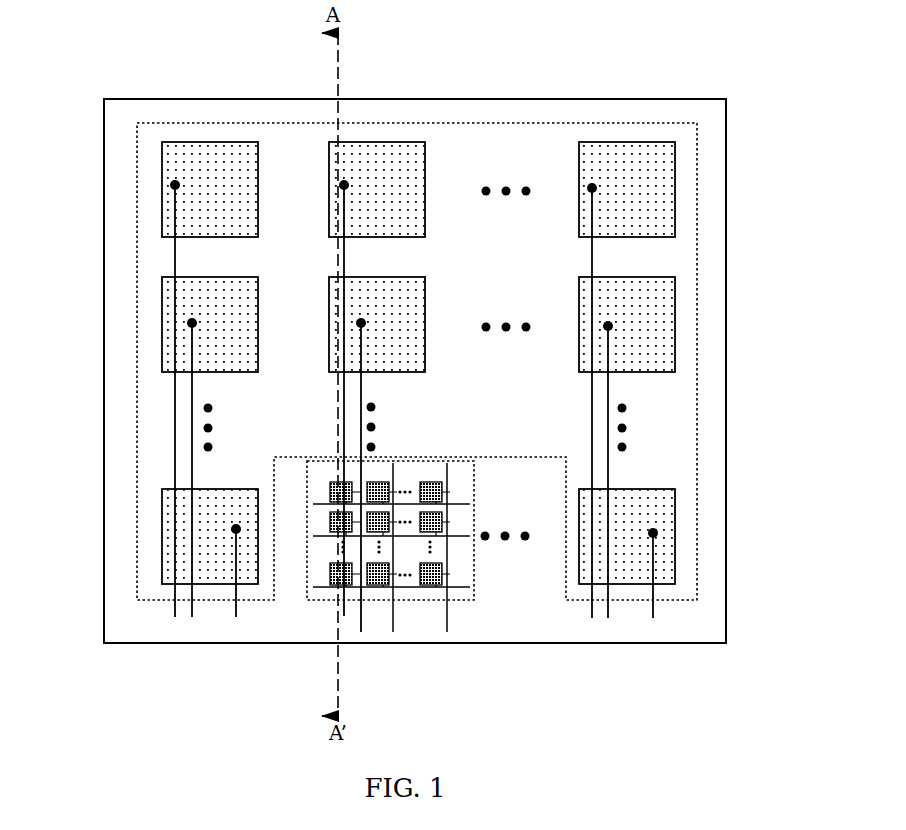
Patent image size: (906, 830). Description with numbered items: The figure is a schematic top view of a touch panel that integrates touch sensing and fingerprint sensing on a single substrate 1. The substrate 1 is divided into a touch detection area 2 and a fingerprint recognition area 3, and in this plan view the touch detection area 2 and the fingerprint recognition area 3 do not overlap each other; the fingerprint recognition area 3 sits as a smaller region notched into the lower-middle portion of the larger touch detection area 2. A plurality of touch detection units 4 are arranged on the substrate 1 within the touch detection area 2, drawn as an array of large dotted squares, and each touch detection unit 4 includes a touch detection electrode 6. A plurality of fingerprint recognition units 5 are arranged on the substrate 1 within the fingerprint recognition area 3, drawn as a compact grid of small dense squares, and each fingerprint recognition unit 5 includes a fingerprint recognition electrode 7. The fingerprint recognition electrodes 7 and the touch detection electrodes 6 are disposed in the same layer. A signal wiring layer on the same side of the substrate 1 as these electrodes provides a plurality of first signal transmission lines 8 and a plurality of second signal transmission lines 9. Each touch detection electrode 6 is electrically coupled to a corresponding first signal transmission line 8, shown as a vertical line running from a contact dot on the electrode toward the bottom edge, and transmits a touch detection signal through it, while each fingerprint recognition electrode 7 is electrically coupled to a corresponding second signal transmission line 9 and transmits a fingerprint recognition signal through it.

The substrate 1 is at (728, 145).
The touch detection area 2 is at (136, 132).
The fingerprint recognition area 3 is at (426, 579).
The touch detection unit 4 is at (161, 169).
The fingerprint recognition unit 5 is at (444, 582).
The touch detection electrode 6 is at (208, 166).
The fingerprint recognition electrode 7 is at (378, 584).
The first signal transmission line 8 is at (174, 430).
The second signal transmission line 9 is at (396, 613).